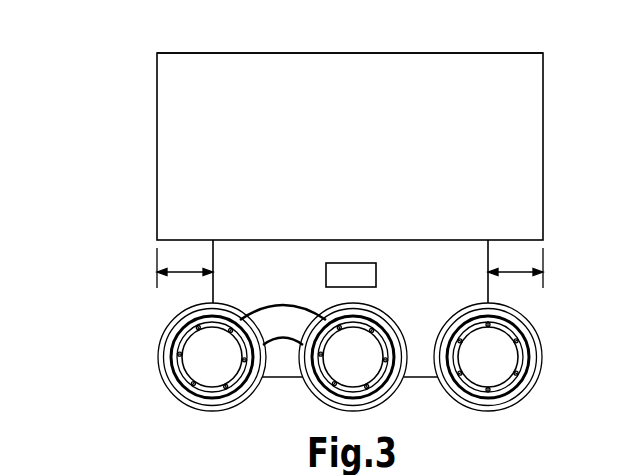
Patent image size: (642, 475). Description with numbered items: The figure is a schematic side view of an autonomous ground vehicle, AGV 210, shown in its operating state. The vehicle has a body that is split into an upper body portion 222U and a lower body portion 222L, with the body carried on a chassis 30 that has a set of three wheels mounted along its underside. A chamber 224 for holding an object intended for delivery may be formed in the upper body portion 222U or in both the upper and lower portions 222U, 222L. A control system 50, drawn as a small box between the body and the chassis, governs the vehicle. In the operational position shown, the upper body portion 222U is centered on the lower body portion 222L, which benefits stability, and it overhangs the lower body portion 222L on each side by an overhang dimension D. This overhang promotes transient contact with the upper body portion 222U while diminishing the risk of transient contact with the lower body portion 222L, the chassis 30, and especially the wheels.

The AGV 210 is at (472, 27).
The chamber 224 is at (157, 146).
The upper body portion 222U is at (357, 53).
The lower body portion 222L is at (212, 293).
The control system 50 is at (353, 275).
The chassis 30 is at (372, 365).
The overhang dimension D is at (350, 267).